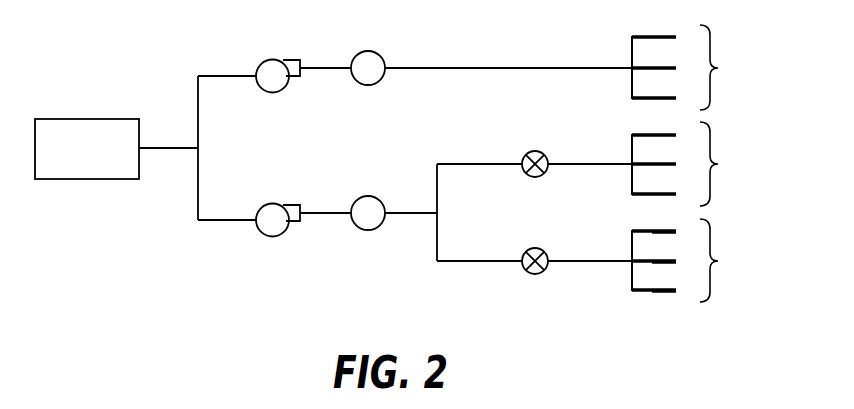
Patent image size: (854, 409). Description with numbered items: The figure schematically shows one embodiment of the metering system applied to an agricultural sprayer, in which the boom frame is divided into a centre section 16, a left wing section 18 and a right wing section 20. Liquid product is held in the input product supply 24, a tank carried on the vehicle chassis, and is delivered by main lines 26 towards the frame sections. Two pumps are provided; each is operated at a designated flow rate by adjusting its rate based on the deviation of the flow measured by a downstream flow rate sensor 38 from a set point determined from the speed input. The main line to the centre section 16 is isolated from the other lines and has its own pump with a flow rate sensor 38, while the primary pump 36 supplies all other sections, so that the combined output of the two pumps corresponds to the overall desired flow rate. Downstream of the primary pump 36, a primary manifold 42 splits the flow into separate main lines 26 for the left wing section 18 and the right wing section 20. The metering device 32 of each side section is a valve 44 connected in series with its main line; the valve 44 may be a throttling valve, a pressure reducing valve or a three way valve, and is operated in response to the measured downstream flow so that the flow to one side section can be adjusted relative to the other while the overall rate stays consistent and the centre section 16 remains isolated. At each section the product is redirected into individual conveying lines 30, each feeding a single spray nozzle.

The centre section 16 is at (693, 67).
The left wing section 18 is at (693, 164).
The right wing section 20 is at (693, 260).
The input product supply 24 is at (88, 119).
The main lines 26 is at (226, 76).
The individual conveying lines 30 is at (652, 233).
The metering device 32 is at (530, 152).
The primary pump 36 is at (273, 59).
The flow rate sensor 38 is at (363, 51).
The primary manifold 42 is at (437, 222).
The valve 44 is at (541, 175).